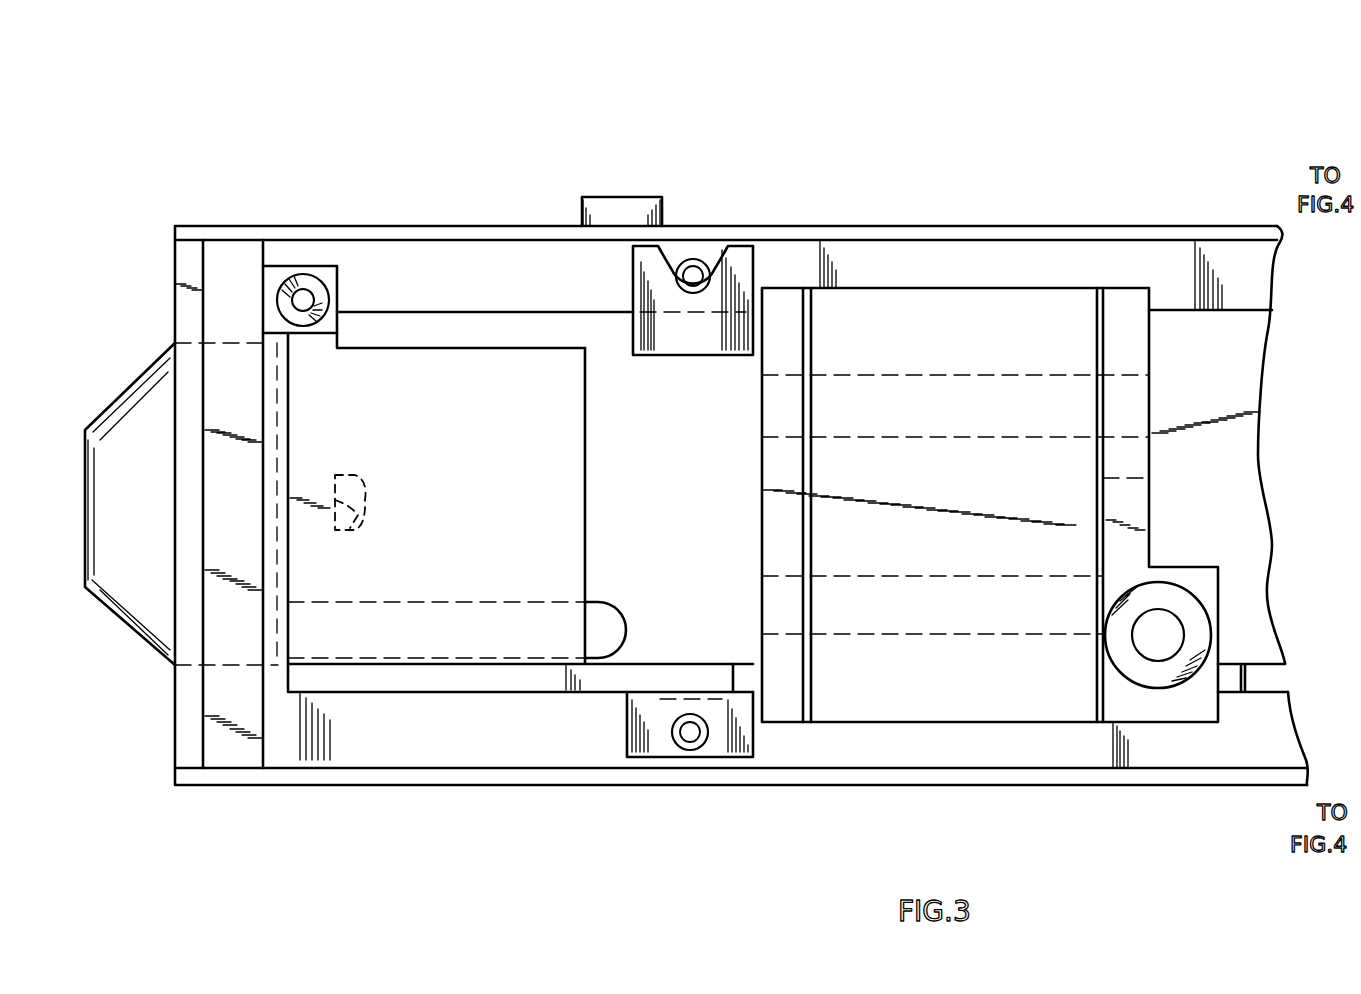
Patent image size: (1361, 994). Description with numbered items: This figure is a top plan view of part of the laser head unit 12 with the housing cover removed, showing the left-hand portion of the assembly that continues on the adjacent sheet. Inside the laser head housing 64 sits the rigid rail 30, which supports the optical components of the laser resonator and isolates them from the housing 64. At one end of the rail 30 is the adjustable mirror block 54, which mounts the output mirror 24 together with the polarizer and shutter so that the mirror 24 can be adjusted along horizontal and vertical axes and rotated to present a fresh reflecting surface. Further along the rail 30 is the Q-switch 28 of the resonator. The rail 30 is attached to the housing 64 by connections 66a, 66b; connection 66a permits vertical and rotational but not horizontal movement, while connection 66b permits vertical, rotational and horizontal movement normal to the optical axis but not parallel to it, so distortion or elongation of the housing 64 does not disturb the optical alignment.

The laser head unit 12 is at (696, 442).
The mirror 24 is at (360, 500).
The Q-switch 28 is at (957, 272).
The rail 30 is at (430, 683).
The adjustable mirror block 54 is at (420, 288).
The laser head housing 64 is at (583, 778).
The connection 66a is at (702, 748).
The connection 66b is at (702, 268).